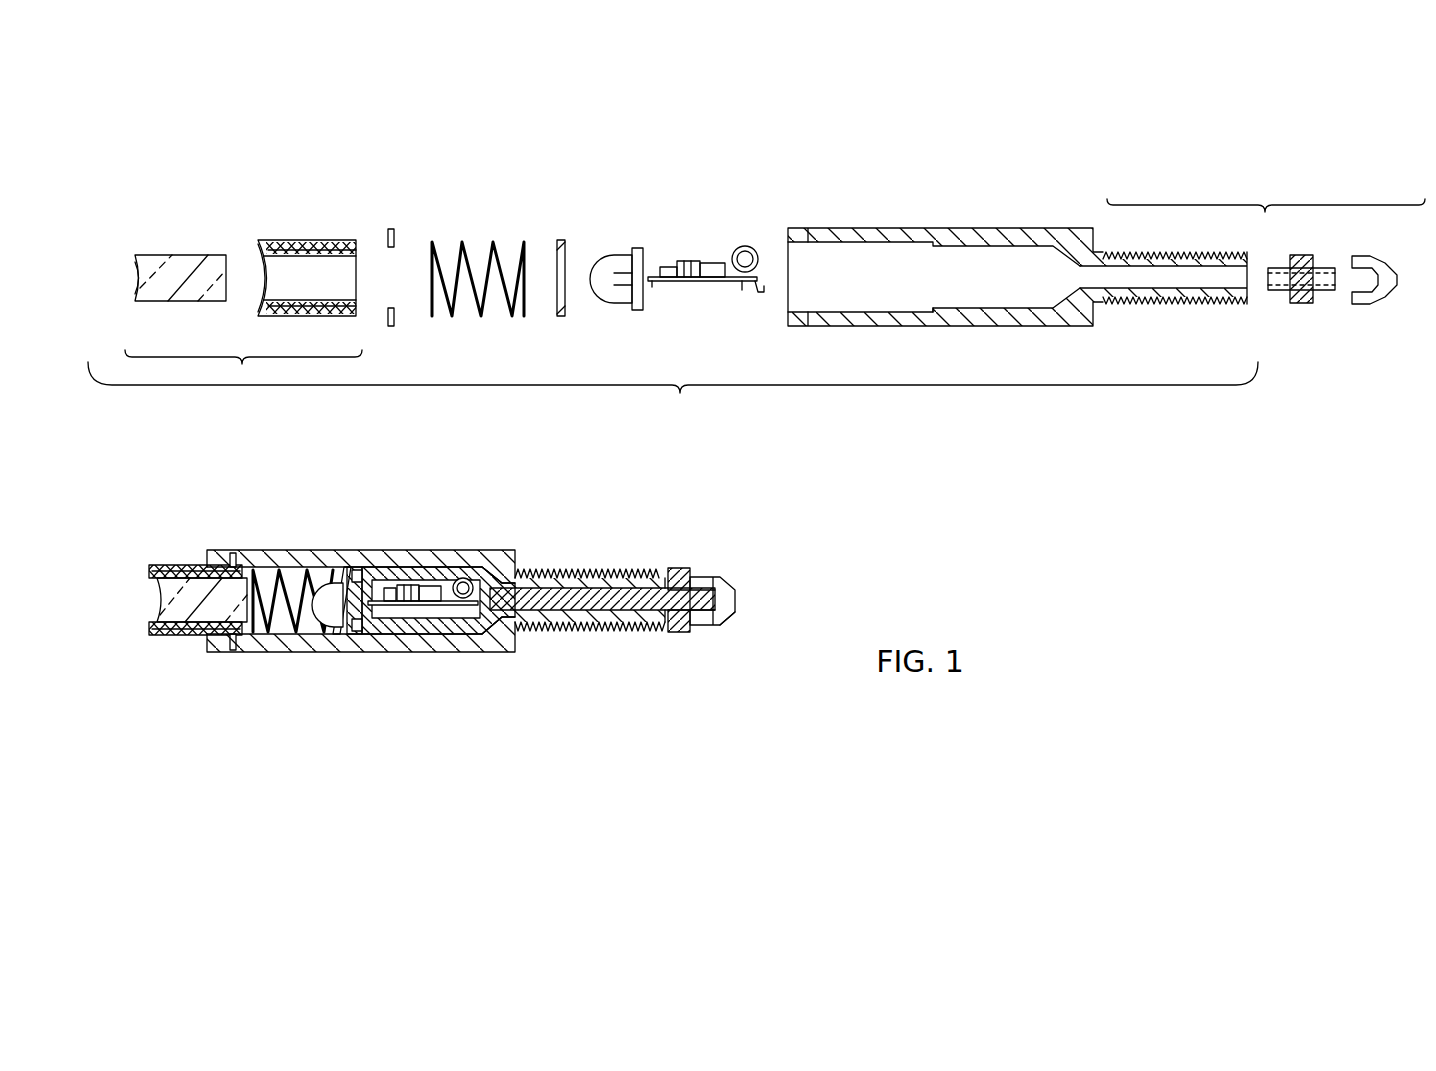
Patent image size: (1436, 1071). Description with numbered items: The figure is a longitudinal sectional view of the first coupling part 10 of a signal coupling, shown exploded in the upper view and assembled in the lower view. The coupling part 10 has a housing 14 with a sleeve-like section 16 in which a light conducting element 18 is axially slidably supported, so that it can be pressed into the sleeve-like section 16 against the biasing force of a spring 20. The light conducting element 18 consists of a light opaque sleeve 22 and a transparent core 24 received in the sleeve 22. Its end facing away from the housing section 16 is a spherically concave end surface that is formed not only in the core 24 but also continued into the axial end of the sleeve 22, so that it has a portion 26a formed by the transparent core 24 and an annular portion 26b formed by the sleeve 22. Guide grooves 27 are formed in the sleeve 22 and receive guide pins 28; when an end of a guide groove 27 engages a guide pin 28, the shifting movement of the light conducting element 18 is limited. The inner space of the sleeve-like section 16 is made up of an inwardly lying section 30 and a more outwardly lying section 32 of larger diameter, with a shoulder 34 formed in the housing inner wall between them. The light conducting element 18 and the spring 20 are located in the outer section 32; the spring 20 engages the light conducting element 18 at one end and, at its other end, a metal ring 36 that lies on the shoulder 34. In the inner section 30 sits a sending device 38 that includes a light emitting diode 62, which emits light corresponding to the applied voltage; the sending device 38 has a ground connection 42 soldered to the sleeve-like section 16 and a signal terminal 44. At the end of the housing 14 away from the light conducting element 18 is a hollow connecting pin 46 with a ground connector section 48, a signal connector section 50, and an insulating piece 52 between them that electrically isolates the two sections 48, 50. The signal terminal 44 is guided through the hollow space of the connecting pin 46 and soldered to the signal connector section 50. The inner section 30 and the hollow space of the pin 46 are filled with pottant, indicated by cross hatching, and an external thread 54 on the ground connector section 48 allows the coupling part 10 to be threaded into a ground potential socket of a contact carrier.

The first coupling part 10 is at (375, 770).
The housing 14 is at (931, 214).
The sleeve-like section 16 is at (832, 318).
The light conducting element 18 is at (155, 548).
The spring 20 is at (462, 248).
The light opaque sleeve 22 is at (262, 316).
The transparent core 24 is at (175, 255).
The end surface portion formed by the transparent core 26a is at (136, 285).
The end surface portion formed by the sleeve 26b is at (259, 250).
The guide groove 27 is at (319, 242).
The guide pin 28 is at (392, 262).
The inwardly lying inner space section 30 is at (1011, 255).
The outwardly lying inner space section 32 is at (862, 250).
The shoulder 34 is at (918, 322).
The metal ring 36 is at (566, 246).
The sending device 38 is at (697, 250).
The ground connection 42 is at (500, 645).
The signal terminal 44 is at (722, 624).
The hollow connecting pin 46 is at (628, 558).
The ground connector section 48 is at (1145, 253).
The signal connector section 50 is at (1380, 258).
The insulating piece 52 is at (1300, 256).
The external thread 54 is at (1155, 302).
The light emitting diode 62 is at (622, 303).